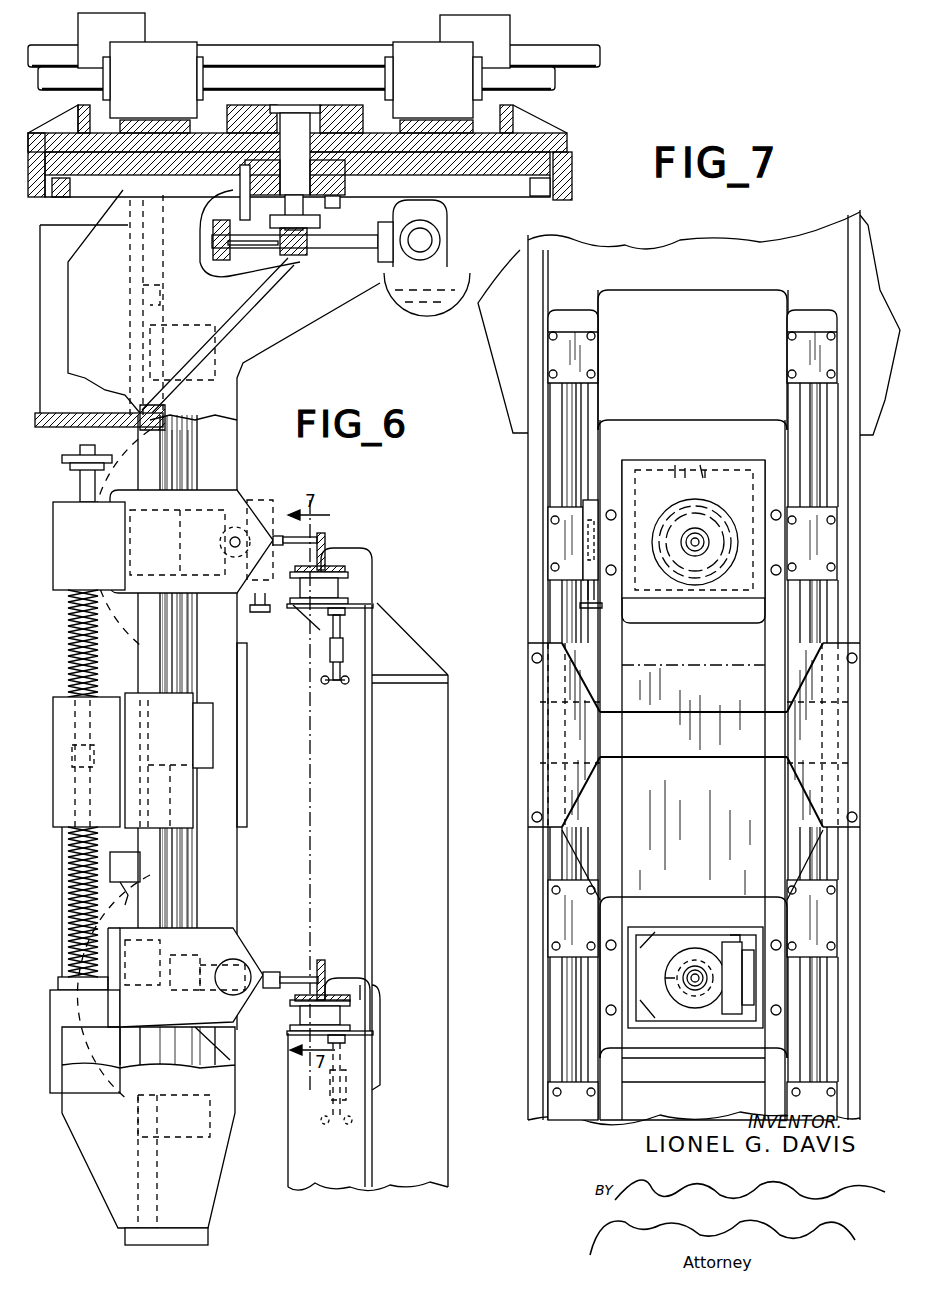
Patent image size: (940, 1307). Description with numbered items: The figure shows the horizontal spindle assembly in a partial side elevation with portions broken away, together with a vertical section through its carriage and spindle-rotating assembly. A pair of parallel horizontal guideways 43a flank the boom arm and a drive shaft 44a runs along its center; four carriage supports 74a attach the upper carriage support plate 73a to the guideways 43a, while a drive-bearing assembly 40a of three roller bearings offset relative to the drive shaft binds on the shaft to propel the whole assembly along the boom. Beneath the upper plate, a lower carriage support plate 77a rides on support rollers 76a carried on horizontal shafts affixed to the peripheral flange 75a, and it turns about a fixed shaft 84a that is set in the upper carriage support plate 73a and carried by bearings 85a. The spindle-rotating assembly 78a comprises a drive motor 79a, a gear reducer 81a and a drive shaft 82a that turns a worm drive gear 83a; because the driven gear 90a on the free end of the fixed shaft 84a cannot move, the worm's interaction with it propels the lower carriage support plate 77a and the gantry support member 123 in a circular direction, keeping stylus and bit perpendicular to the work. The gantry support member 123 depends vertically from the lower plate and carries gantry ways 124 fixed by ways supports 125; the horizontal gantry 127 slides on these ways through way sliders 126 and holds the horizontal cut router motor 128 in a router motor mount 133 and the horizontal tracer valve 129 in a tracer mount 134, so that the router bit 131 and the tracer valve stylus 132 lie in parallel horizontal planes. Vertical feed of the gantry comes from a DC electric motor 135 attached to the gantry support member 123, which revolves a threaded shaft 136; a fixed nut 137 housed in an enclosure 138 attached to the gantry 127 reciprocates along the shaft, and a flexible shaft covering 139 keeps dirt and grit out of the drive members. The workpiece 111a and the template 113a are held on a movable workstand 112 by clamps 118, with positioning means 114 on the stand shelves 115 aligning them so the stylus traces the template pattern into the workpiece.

In FIG. 6, the carriage supports 74a is at (87, 40).
In FIG. 6, the drive-bearing assembly 40a is at (182, 48).
In FIG. 6, the drive shaft 44a is at (247, 70).
In FIG. 6, the guideways 43a is at (573, 54).
In FIG. 6, the fixed shaft 84a is at (312, 130).
In FIG. 6, the upper carriage support plate 73a is at (527, 131).
In FIG. 6, the lower carriage support plate 77a is at (545, 165).
In FIG. 6, the peripheral flange 75a is at (573, 185).
In FIG. 6, the support rollers 76a is at (540, 198).
In FIG. 6, the bearings 85a is at (340, 195).
In FIG. 6, the gear reducer 81a is at (450, 238).
In FIG. 6, the drive motor 79a is at (458, 277).
In FIG. 6, the drive shaft 82a is at (385, 250).
In FIG. 6, the worm drive gear 83a is at (288, 258).
In FIG. 6, the driven gear 90a is at (250, 262).
In FIG. 6, the spindle-rotating assembly 78a is at (285, 265).
In FIG. 6, the DC electric motor 135 is at (85, 240).
In FIG. 6, the ways supports 125 is at (240, 385).
In FIG. 7, the ways supports 125 is at (568, 330).
In FIG. 6, the gantry support member 123 is at (240, 400).
In FIG. 7, the gantry support member 123 is at (522, 351).
In FIG. 6, the horizontal cut router motor 128 is at (228, 488).
In FIG. 7, the horizontal cut router motor 128 is at (688, 500).
In FIG. 6, the threaded shaft 136 is at (80, 482).
In FIG. 6, the router bit 131 is at (325, 540).
In FIG. 7, the router bit 131 is at (693, 550).
In FIG. 6, the workpiece 111a is at (327, 562).
In FIG. 6, the clamps 118 is at (368, 572).
In FIG. 6, the positioning means 114 is at (332, 592).
In FIG. 6, the stand shelves 115 is at (345, 615).
In FIG. 6, the gantry ways 124 is at (185, 672).
In FIG. 7, the gantry ways 124 is at (560, 455).
In FIG. 6, the flexible shaft covering 139 is at (73, 620).
In FIG. 6, the fixed nut 137 is at (97, 752).
In FIG. 6, the enclosure 138 is at (60, 815).
In FIG. 6, the horizontal gantry 127 is at (200, 865).
In FIG. 7, the horizontal gantry 127 is at (597, 850).
In FIG. 6, the horizontal tracer valve 129 is at (230, 932).
In FIG. 7, the horizontal tracer valve 129 is at (692, 975).
In FIG. 6, the tracer valve stylus 132 is at (293, 975).
In FIG. 7, the tracer valve stylus 132 is at (694, 988).
In FIG. 6, the template 113a is at (325, 962).
In FIG. 6, the movable workstand 112 is at (448, 880).
In FIG. 7, the way sliders 126 is at (553, 545).
In FIG. 7, the router motor mount 133 is at (738, 580).
In FIG. 7, the tracer mount 134 is at (738, 1008).